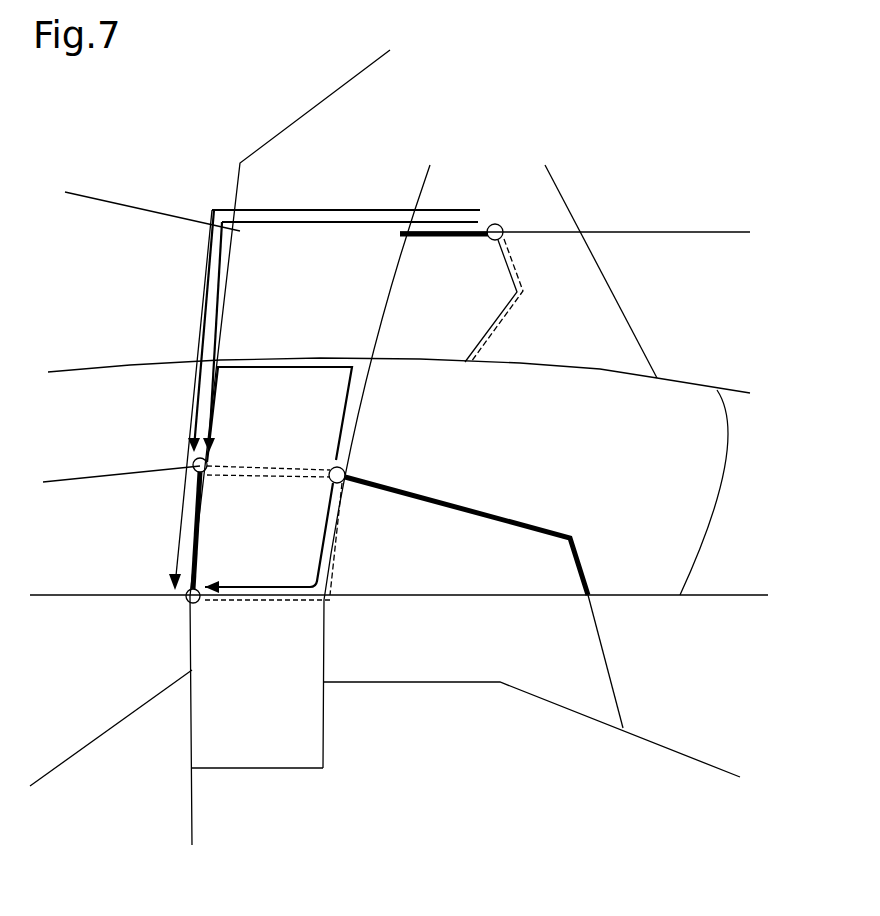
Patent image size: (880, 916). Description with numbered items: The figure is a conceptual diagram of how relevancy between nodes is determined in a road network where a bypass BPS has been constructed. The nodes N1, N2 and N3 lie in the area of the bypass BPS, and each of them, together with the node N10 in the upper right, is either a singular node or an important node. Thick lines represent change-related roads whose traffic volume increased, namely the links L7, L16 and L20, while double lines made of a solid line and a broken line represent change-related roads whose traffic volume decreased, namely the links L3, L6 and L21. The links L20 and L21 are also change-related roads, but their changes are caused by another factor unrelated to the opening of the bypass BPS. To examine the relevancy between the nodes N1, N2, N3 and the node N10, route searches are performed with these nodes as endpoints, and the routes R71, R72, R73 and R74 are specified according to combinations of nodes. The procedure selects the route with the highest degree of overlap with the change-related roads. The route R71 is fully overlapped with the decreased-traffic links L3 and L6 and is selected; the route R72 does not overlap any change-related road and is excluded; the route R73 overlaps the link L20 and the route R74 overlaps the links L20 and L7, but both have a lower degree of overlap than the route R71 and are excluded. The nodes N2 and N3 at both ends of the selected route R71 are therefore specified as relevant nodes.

The route R74 is at (310, 207).
The route R73 is at (303, 228).
The node N10 is at (495, 220).
The link L20 is at (438, 240).
The link L21 is at (517, 268).
The route R72 is at (298, 369).
The node N3 is at (213, 458).
The bypass BPS is at (273, 466).
The node N2 is at (347, 472).
The link L16 is at (500, 515).
The link L6 is at (340, 532).
The link L7 is at (202, 529).
The route R71 is at (265, 583).
The node N1 is at (188, 600).
The link L3 is at (263, 602).